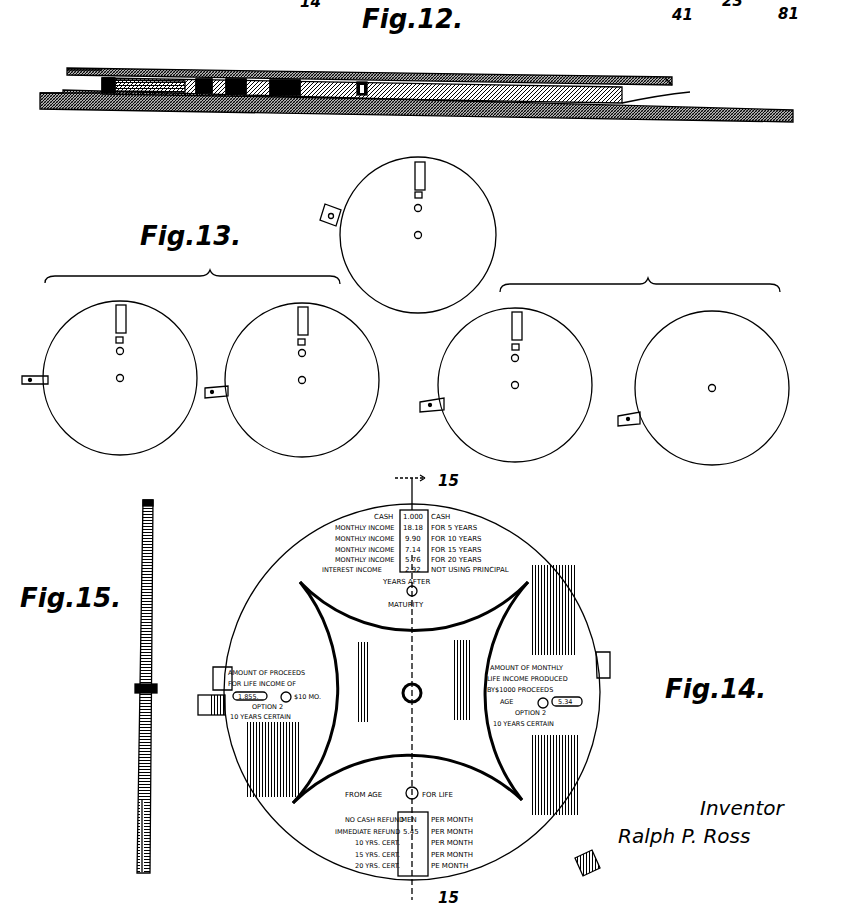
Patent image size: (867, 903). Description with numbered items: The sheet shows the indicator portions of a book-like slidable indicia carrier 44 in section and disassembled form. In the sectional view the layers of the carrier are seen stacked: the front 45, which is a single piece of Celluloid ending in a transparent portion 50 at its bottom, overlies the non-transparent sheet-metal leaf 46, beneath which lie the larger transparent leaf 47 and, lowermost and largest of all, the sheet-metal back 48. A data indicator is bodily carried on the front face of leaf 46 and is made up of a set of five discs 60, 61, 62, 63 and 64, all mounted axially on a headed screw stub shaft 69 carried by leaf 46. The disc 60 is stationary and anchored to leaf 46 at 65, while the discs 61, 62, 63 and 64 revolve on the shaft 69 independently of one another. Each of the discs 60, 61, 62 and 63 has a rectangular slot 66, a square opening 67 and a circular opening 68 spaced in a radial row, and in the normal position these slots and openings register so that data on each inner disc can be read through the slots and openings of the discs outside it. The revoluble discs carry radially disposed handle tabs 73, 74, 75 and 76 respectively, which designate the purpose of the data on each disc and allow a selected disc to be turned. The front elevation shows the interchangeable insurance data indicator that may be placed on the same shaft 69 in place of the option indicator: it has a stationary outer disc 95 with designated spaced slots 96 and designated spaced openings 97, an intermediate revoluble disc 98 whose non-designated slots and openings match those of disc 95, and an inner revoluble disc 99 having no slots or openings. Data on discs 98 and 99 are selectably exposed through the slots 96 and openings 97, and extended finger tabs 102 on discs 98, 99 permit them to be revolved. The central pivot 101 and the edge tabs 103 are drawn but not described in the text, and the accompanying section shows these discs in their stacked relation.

In FIG. 12, the slidable indicia carrier 44 is at (493, 76).
In FIG. 12, the front 45 is at (568, 80).
In FIG. 12, the leaf 46 is at (690, 92).
In FIG. 12, the leaf 47 is at (750, 112).
In FIG. 12, the back 48 is at (755, 122).
In FIG. 12, the transparent portion 50 is at (665, 82).
In FIG. 12, the disc 60 is at (112, 78).
In FIG. 13, the disc 60 is at (485, 218).
In FIG. 12, the disc 61 is at (90, 78).
In FIG. 13, the disc 61 is at (172, 336).
In FIG. 12, the disc 62 is at (145, 88).
In FIG. 13, the disc 62 is at (362, 415).
In FIG. 12, the disc 63 is at (100, 80).
In FIG. 13, the disc 63 is at (575, 348).
In FIG. 12, the disc 64 is at (140, 105).
In FIG. 13, the disc 64 is at (703, 452).
In FIG. 13, the anchor 65 is at (330, 204).
In FIG. 12, the rectangular slot 66 is at (198, 80).
In FIG. 13, the rectangular slot 66 is at (425, 172).
In FIG. 12, the square opening 67 is at (230, 79).
In FIG. 13, the square opening 67 is at (414, 195).
In FIG. 12, the circular opening 68 is at (278, 80).
In FIG. 13, the circular opening 68 is at (422, 207).
In FIG. 12, the headed screw stub shaft 69 is at (366, 82).
In FIG. 13, the handle tab 73 is at (38, 386).
In FIG. 13, the handle tab 74 is at (212, 386).
In FIG. 13, the handle tab 75 is at (426, 400).
In FIG. 13, the handle tab 76 is at (630, 427).
In FIG. 15, the stationary outer disc 95 is at (150, 503).
In FIG. 14, the stationary outer disc 95 is at (548, 590).
In FIG. 15, the slot 96 is at (153, 525).
In FIG. 14, the slot 96 is at (405, 495).
In FIG. 15, the opening 97 is at (152, 590).
In FIG. 14, the opening 97 is at (418, 591).
In FIG. 15, the intermediate revoluble disc 98 is at (150, 500).
In FIG. 15, the inner revoluble disc 99 is at (149, 500).
In FIG. 15, the center pivot 101 is at (152, 685).
In FIG. 14, the center pivot 101 is at (418, 685).
In FIG. 15, the finger tab 102 is at (146, 735).
In FIG. 14, the finger tab 102 is at (210, 715).
In FIG. 14, the tab 103 is at (220, 667).